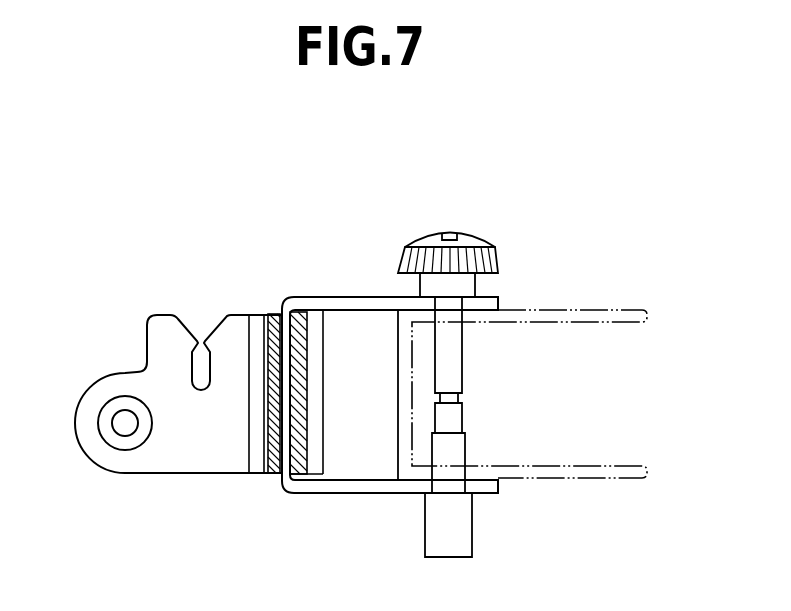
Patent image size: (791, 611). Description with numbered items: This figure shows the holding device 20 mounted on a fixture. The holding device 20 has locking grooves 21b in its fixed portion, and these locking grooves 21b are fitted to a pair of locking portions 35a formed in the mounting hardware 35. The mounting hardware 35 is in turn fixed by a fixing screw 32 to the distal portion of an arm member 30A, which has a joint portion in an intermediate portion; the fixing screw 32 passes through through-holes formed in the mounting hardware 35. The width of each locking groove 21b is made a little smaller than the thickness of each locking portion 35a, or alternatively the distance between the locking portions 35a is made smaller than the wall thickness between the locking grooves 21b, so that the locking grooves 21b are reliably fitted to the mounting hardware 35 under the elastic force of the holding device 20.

The holding device 20 is at (172, 262).
The locking grooves 21b is at (274, 298).
The mounting hardware 35 is at (345, 300).
The locking portions 35a is at (287, 428).
The fixing screw 32 is at (475, 252).
The arm member 30A is at (593, 305).